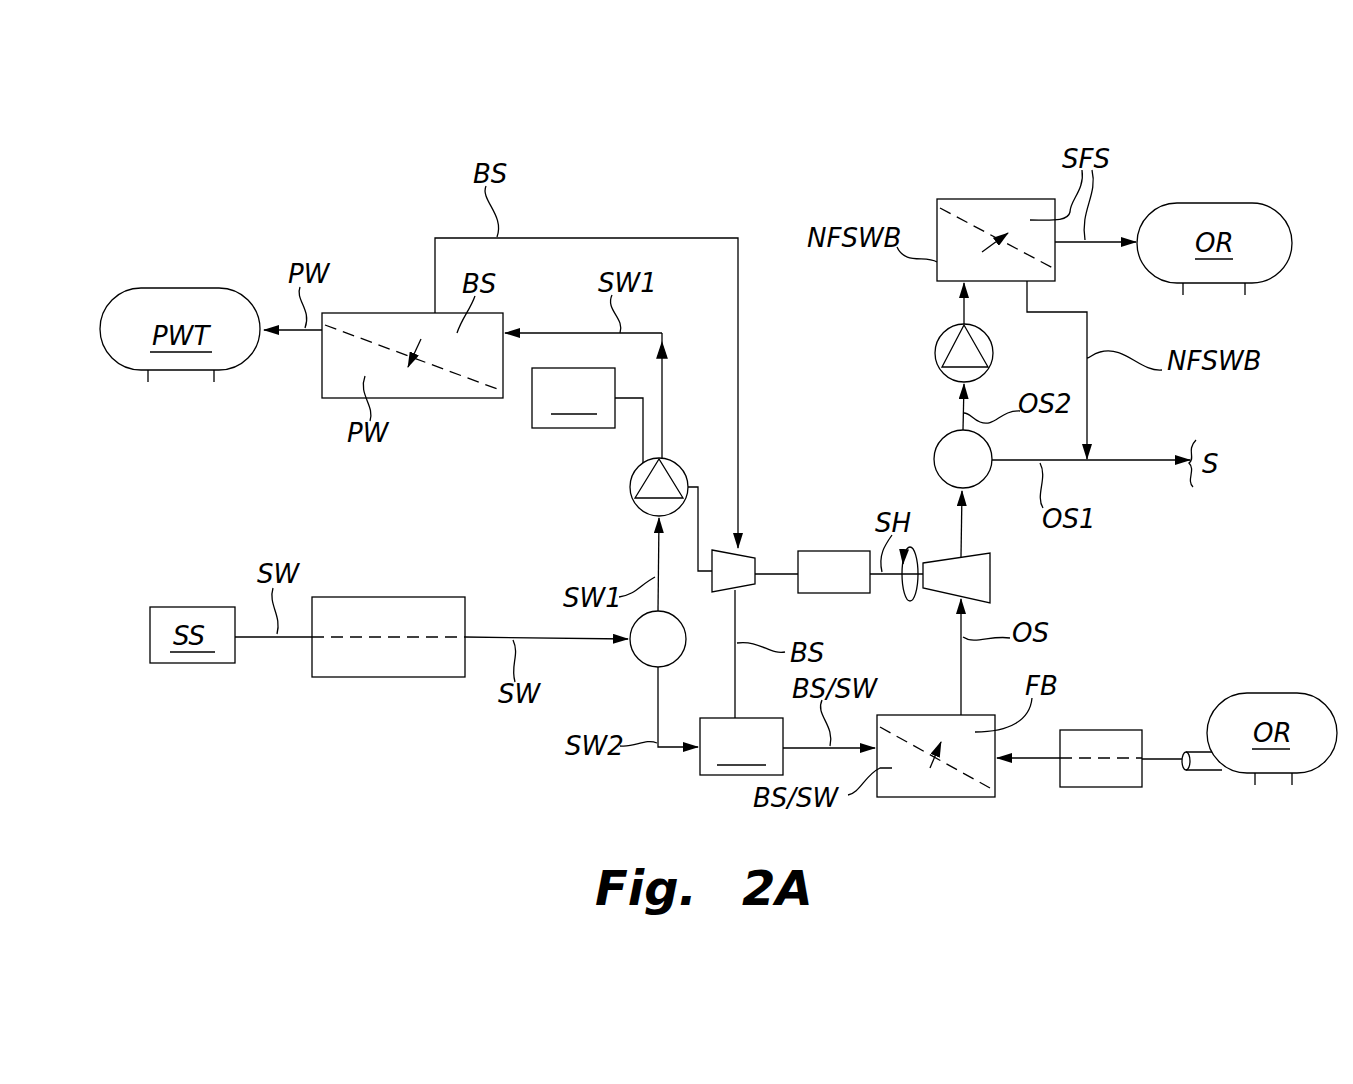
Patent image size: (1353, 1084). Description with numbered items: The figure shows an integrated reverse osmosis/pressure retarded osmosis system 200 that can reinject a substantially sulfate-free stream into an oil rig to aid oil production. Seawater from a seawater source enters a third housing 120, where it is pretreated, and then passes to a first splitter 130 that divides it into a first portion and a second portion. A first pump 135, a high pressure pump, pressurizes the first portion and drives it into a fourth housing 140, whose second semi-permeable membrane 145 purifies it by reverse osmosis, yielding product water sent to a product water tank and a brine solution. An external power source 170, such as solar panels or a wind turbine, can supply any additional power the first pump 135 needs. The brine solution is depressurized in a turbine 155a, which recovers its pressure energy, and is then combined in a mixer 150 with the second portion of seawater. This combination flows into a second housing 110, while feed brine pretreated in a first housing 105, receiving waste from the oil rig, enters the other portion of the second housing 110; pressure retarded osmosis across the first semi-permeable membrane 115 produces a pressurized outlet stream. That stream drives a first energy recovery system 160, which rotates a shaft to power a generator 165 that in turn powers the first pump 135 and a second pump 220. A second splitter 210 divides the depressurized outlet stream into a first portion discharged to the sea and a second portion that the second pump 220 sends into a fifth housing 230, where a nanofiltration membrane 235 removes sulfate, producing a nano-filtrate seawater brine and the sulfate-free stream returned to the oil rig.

The integrated reverse osmosis/pressure retarded osmosis system 200 is at (240, 168).
The first housing 105 is at (1120, 787).
The second housing 110 is at (902, 797).
The first semi-permeable membrane 115 is at (962, 772).
The third housing 120 is at (387, 677).
The first splitter 130 is at (636, 661).
The first pump 135 is at (640, 510).
The fourth housing 140 is at (322, 398).
The second semi-permeable membrane 145 is at (443, 366).
The mixer 150 is at (741, 746).
The turbine 155a is at (756, 588).
The first energy recovery system 160 is at (990, 575).
The generator 165 is at (823, 551).
The external power source 170 is at (573, 398).
The second splitter 210 is at (937, 442).
The second pump 220 is at (937, 340).
The fifth housing 230 is at (997, 199).
The nanofiltration membrane 235 is at (960, 220).